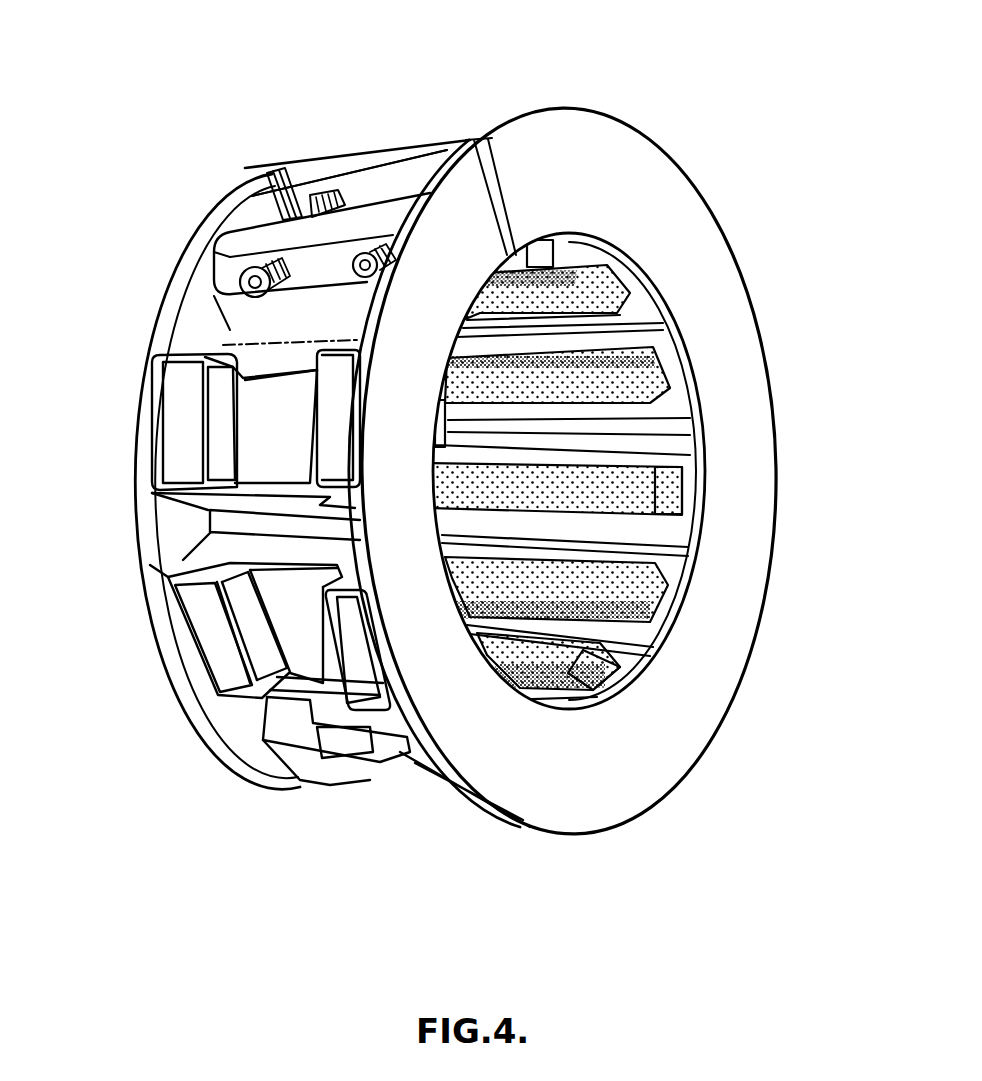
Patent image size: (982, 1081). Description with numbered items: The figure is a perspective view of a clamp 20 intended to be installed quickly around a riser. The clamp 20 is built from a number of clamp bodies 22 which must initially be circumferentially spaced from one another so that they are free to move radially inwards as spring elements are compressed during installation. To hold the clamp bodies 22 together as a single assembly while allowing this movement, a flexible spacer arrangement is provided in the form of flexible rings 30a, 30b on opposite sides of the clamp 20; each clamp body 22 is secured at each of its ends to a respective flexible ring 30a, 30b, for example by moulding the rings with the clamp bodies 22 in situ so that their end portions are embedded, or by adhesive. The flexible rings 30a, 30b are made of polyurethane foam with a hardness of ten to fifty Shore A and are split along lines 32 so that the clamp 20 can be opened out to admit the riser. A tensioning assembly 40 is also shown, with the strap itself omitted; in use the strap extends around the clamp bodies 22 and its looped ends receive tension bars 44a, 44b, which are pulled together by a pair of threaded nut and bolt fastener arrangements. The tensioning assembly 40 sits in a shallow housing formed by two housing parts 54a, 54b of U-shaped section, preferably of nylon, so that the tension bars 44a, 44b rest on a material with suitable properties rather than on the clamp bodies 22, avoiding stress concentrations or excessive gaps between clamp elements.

The clamp 20 is at (412, 828).
The clamp body 22 is at (198, 633).
The flexible ring 30a is at (133, 518).
The flexible ring 30b is at (767, 343).
The split line 32 is at (481, 127).
The tensioning assembly 40 is at (430, 134).
The tension bar 44a is at (240, 285).
The tension bar 44b is at (358, 167).
The housing part 54a is at (192, 250).
The housing part 54b is at (302, 163).